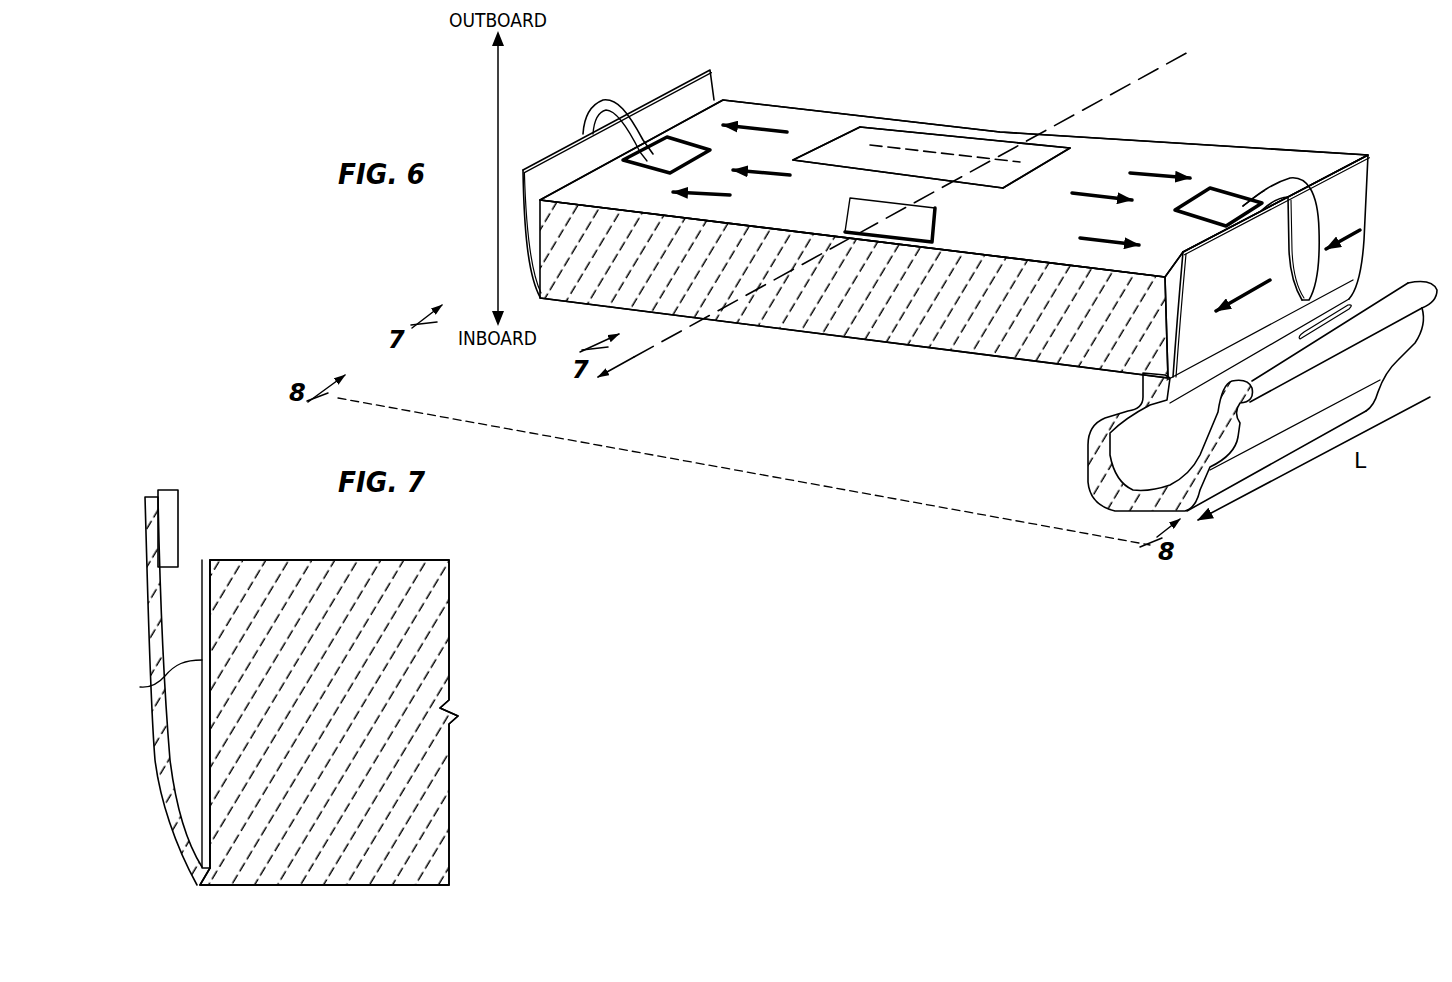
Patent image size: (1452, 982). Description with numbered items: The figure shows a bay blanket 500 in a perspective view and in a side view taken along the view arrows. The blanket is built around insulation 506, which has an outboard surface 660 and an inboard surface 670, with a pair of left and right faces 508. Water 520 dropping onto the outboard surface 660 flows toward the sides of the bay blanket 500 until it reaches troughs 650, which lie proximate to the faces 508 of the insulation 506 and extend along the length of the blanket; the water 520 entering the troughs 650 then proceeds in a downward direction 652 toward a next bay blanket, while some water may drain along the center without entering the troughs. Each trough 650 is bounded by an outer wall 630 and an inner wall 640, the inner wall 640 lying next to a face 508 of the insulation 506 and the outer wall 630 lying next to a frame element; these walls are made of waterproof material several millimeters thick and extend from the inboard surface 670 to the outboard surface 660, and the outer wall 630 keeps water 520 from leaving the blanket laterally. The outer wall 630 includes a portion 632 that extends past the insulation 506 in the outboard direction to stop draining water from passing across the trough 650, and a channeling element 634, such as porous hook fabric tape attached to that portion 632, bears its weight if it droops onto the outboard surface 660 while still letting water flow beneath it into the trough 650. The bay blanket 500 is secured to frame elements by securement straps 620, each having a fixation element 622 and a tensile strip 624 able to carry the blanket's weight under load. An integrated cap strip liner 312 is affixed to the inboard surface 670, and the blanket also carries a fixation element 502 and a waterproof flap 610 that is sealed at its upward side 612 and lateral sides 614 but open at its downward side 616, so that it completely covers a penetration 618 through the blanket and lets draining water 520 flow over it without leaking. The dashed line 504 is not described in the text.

In FIG. 6, the integrated cap strip liner 312 is at (1086, 475).
In FIG. 6, the bay blanket 500 is at (844, 431).
In FIG. 7, the bay blanket 500 is at (526, 709).
In FIG. 6, the fixation element 502 is at (927, 223).
In FIG. 6, the longitudinal axis 504 is at (1121, 88).
In FIG. 6, the insulation 506 is at (1013, 327).
In FIG. 7, the insulation 506 is at (430, 625).
In FIG. 6, the face of insulation 508 is at (543, 278).
In FIG. 7, the face of insulation 508 is at (211, 645).
In FIG. 6, the water 520 is at (718, 193).
In FIG. 6, the waterproof flap 610 is at (965, 147).
In FIG. 6, the upward side 612 is at (897, 130).
In FIG. 6, the lateral sides 614 is at (840, 138).
In FIG. 6, the downward side 616 is at (871, 170).
In FIG. 6, the penetration 618 is at (938, 151).
In FIG. 6, the securement strap 620 is at (610, 83).
In FIG. 6, the fixation element 622 is at (660, 160).
In FIG. 6, the tensile strip 624 is at (1294, 182).
In FIG. 6, the outer wall 630 is at (578, 160).
In FIG. 7, the outer wall 630 is at (150, 600).
In FIG. 7, the portion 632 is at (120, 503).
In FIG. 7, the channeling element 634 is at (172, 502).
In FIG. 7, the inner wall 640 is at (151, 679).
In FIG. 6, the trough 650 is at (718, 88).
In FIG. 7, the trough 650 is at (190, 565).
In FIG. 6, the downward direction 652 is at (1360, 235).
In FIG. 6, the outboard surface 660 is at (813, 112).
In FIG. 7, the outboard surface 660 is at (335, 559).
In FIG. 6, the inboard surface 670 is at (893, 344).
In FIG. 7, the inboard surface 670 is at (306, 886).